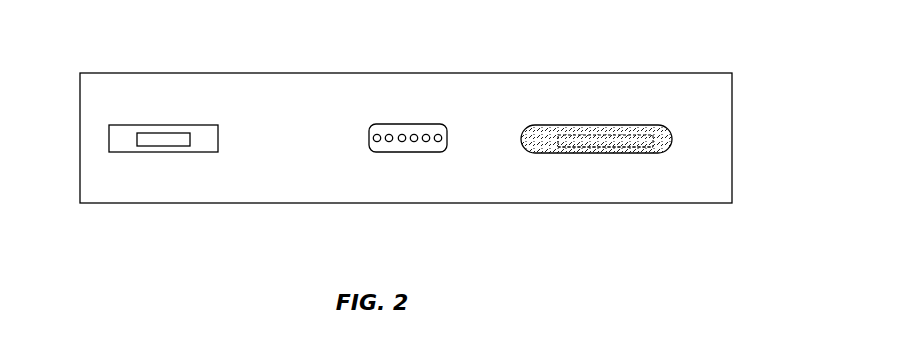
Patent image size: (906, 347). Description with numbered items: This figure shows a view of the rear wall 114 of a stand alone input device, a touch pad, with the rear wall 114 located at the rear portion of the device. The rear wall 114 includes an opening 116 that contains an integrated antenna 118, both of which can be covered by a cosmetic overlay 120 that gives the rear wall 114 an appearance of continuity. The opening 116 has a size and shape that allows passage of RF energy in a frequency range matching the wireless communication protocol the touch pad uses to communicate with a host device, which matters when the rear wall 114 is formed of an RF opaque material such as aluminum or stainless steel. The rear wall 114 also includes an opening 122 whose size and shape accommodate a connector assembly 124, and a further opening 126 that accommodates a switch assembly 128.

The rear wall 114 is at (732, 137).
The opening 116 is at (596, 125).
The integrated antenna 118 is at (603, 143).
The cosmetic overlay 120 is at (657, 130).
The opening 122 is at (407, 124).
The connector assembly 124 is at (402, 142).
The opening 126 is at (192, 125).
The switch assembly 128 is at (164, 139).